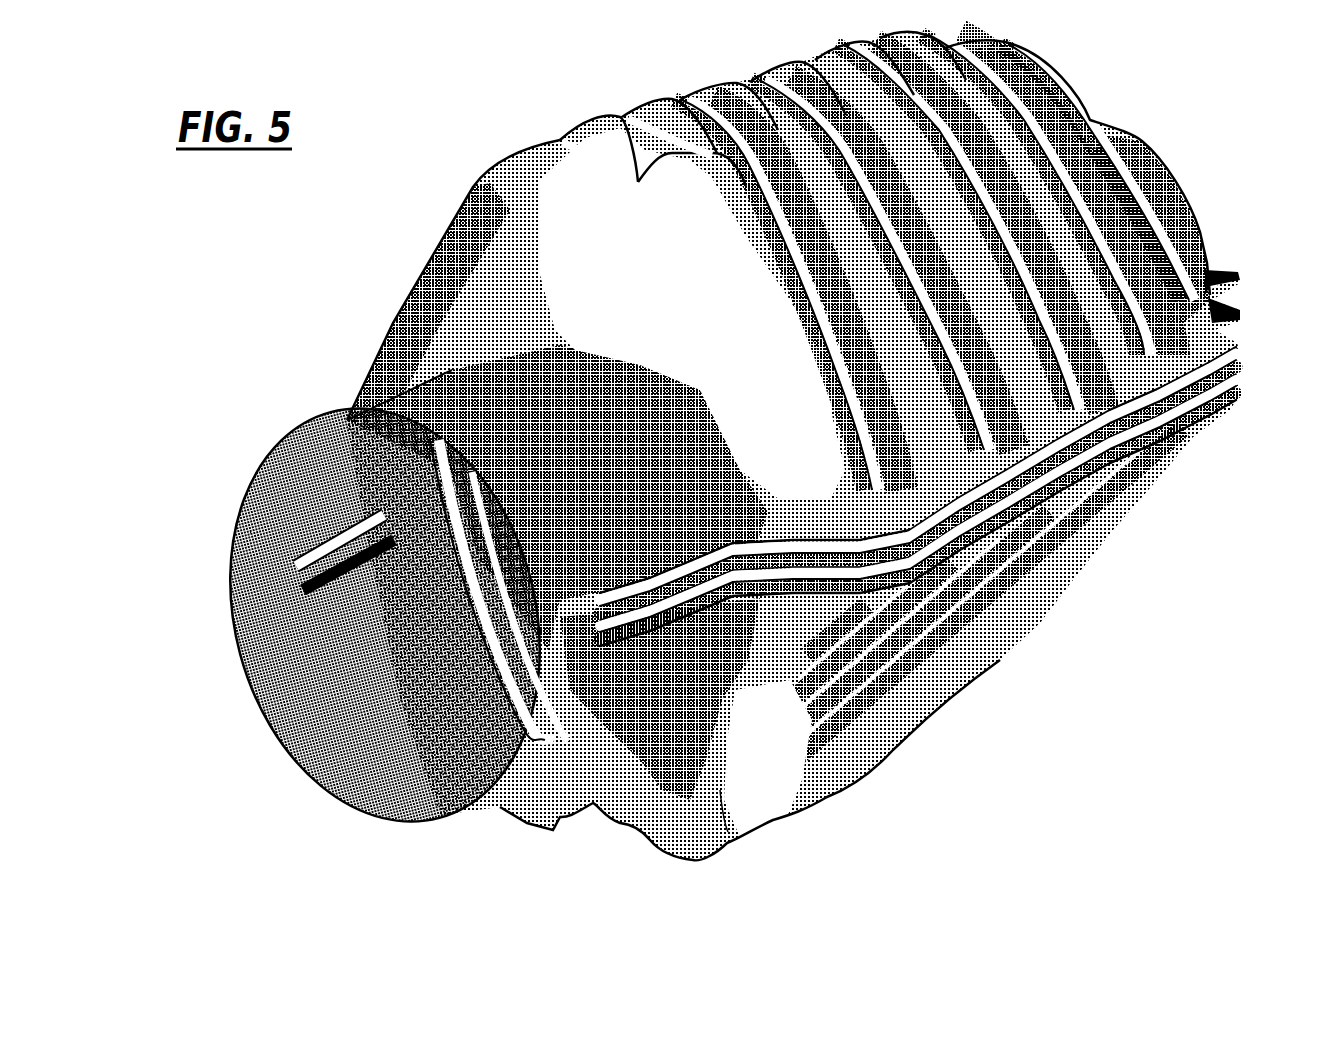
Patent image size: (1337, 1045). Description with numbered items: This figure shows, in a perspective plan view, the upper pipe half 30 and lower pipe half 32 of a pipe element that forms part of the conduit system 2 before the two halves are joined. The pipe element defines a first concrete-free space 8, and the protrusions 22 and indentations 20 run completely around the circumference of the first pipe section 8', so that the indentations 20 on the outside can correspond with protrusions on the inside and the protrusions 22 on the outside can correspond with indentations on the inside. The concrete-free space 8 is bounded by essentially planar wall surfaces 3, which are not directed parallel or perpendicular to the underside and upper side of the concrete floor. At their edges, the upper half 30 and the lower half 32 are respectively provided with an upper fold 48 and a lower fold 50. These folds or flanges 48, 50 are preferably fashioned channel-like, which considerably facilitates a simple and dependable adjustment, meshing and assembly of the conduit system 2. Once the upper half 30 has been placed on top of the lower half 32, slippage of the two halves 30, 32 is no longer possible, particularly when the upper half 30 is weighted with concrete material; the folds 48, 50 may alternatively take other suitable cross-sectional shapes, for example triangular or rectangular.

The conduit system 2 is at (470, 184).
The wall surfaces 3 is at (453, 226).
The first concrete-free space 8 is at (941, 267).
The first pipe section 8' is at (1058, 195).
The indentations 20 is at (680, 100).
The protrusions 22 is at (760, 70).
The upper pipe half 30 is at (400, 326).
The lower pipe half 32 is at (730, 828).
The upper fold 48 is at (1236, 346).
The lower fold 50 is at (300, 573).